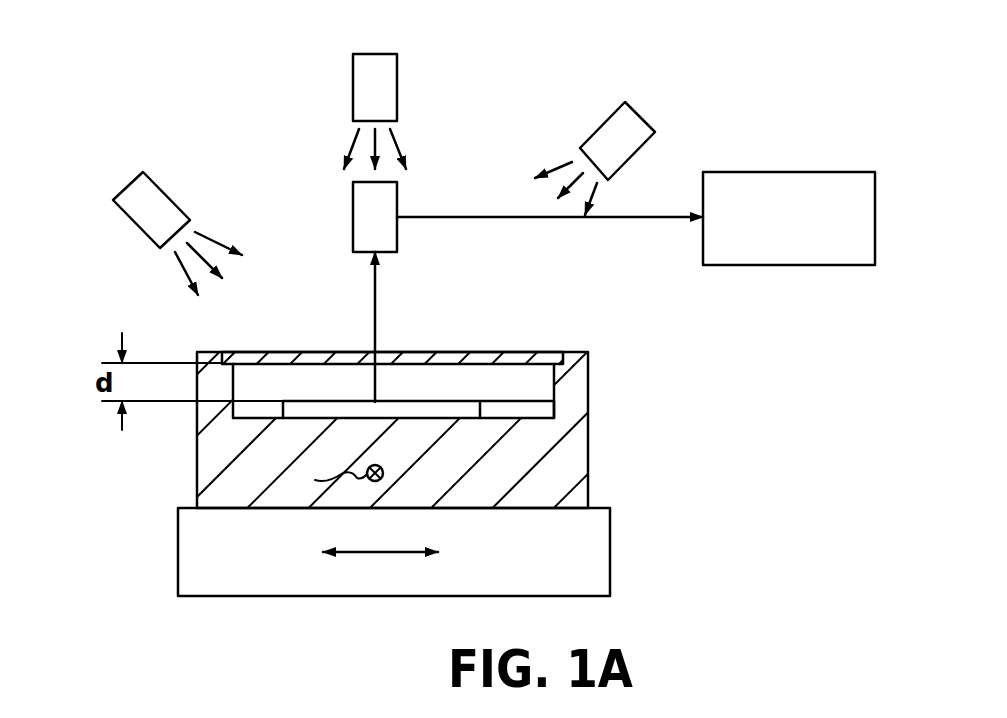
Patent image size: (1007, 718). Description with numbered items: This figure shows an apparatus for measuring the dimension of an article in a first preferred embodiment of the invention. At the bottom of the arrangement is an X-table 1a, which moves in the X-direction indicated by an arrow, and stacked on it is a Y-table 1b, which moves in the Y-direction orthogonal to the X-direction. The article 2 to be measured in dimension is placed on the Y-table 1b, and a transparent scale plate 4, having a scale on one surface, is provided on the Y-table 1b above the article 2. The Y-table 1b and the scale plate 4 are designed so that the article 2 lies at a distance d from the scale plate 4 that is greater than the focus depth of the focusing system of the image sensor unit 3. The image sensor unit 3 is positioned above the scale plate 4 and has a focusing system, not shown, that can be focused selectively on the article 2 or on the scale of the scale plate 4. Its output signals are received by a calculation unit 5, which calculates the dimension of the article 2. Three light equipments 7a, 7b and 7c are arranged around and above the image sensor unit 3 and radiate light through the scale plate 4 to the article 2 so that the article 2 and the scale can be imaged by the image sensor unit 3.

The X-table 1a is at (573, 567).
The Y-table 1b is at (568, 457).
The article 2 is at (480, 401).
The image sensor unit 3 is at (370, 215).
The transparent scale plate 4 is at (433, 352).
The calculation unit 5 is at (825, 240).
The light equipment 7a is at (137, 188).
The light equipment 7b is at (380, 80).
The light equipment 7c is at (632, 130).